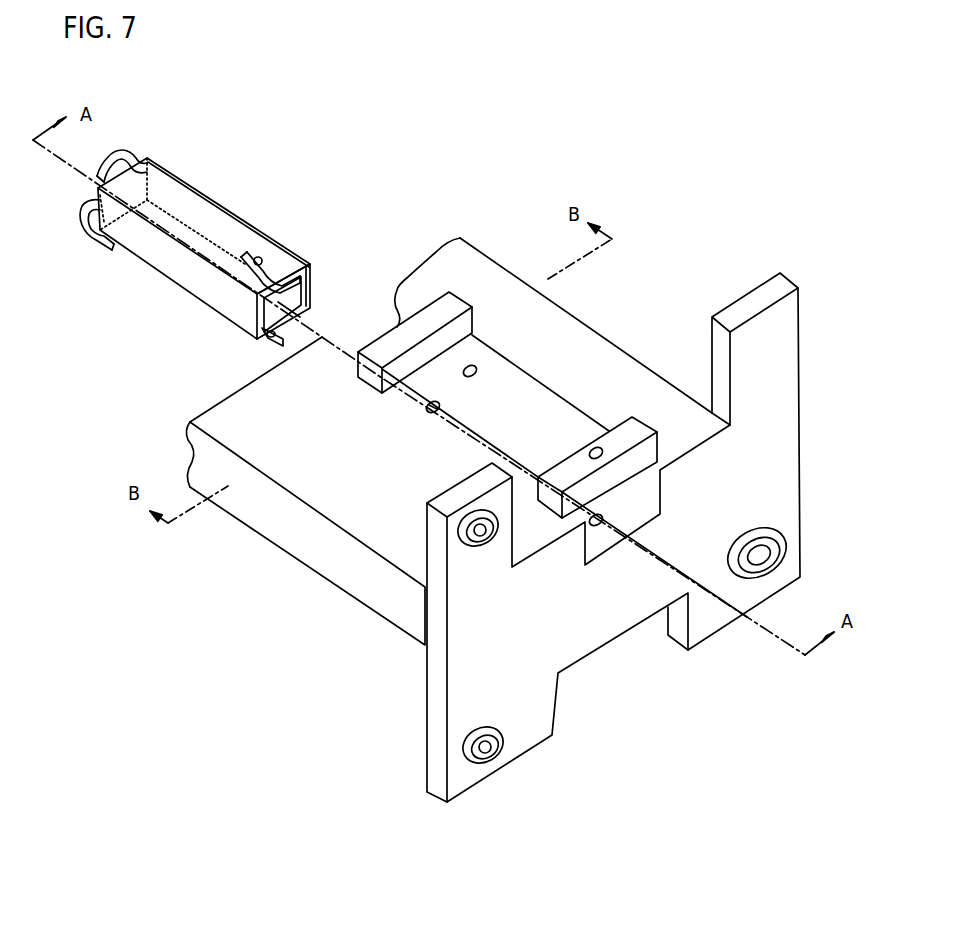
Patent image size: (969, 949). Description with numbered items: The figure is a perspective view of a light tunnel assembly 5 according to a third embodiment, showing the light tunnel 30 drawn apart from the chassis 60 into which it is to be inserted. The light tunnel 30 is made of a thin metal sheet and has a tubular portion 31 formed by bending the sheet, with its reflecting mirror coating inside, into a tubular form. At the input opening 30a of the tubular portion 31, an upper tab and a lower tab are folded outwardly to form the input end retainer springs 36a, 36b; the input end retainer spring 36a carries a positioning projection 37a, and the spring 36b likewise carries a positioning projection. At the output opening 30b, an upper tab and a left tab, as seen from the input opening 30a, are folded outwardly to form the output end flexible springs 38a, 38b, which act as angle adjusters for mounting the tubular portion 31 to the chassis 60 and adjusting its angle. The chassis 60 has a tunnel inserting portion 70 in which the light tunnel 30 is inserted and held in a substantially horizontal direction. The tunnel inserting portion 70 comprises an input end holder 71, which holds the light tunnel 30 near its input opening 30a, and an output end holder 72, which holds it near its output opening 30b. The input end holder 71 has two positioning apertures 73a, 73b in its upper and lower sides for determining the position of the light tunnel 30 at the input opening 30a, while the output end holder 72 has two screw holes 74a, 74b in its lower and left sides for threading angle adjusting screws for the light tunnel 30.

The optical module assembly 5 is at (460, 80).
The light tunnel 30 is at (214, 181).
The tubular portion 31 is at (218, 218).
The input opening 30a is at (295, 290).
The output opening 30b is at (97, 193).
The input end retainer spring 36a is at (278, 270).
The input end retainer spring 36b is at (283, 332).
The positioning projection 37a is at (262, 256).
The output end flexible spring 38a is at (151, 160).
The output end flexible spring 38b is at (103, 232).
The chassis 60 is at (296, 536).
The tunnel inserting portion 70 is at (702, 222).
The input end holder 71 is at (630, 436).
The output end holder 72 is at (450, 306).
The positioning aperture 73a is at (602, 452).
The positioning aperture 73b is at (602, 518).
The screw hole 74a is at (426, 409).
The screw hole 74b is at (464, 374).